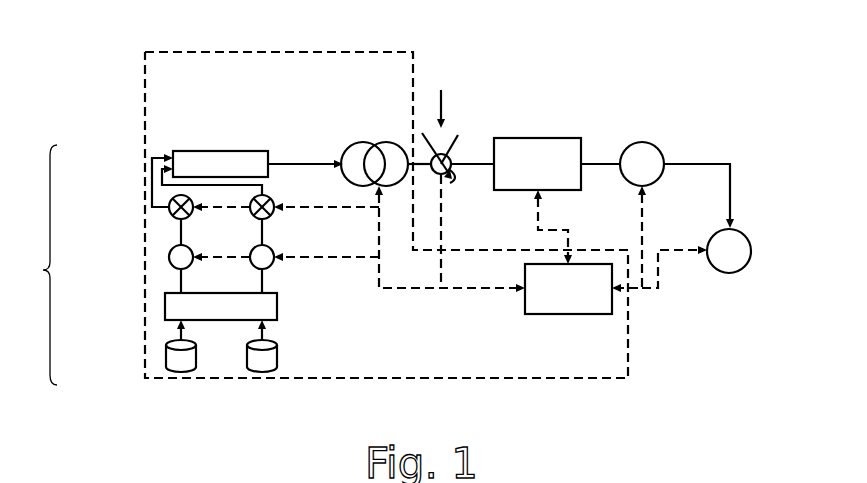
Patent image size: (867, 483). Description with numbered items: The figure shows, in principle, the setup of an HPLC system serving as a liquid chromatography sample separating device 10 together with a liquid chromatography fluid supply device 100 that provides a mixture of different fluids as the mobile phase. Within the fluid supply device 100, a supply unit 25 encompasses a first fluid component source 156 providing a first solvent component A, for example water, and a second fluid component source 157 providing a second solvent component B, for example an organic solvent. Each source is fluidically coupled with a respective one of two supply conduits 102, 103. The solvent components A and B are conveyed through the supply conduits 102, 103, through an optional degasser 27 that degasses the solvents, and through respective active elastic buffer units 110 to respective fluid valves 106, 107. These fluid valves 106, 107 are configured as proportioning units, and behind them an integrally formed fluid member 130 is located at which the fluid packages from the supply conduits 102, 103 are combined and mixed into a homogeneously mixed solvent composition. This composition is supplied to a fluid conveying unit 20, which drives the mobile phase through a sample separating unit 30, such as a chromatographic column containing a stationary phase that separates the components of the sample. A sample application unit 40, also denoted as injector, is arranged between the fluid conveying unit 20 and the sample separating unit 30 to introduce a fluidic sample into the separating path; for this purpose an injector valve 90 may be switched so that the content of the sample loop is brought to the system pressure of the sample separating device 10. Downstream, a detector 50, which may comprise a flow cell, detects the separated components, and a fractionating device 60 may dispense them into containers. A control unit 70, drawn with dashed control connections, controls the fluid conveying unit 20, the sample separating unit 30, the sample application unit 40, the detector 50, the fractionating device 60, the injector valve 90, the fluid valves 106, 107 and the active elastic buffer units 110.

The liquid chromatography sample separating device 10 is at (728, 114).
The fluid conveying unit 20 is at (372, 143).
The supply unit 25 is at (33, 265).
The degasser 27 is at (190, 307).
The sample separating unit 30 is at (556, 138).
The sample application unit 40 is at (452, 135).
The detector 50 is at (640, 142).
The fractionating device 60 is at (751, 244).
The control unit 70 is at (592, 314).
The injector valve 90 is at (462, 142).
The liquid chromatography fluid supply device 100 is at (145, 52).
The supply conduit 102 is at (178, 232).
The supply conduit 103 is at (264, 228).
The fluid valve 106 is at (170, 198).
The fluid valve 107 is at (268, 194).
The elastic buffer unit 110 is at (253, 247).
The integrally formed fluid member 130 is at (212, 167).
The first fluid component source 156 is at (178, 378).
The second fluid component source 157 is at (260, 378).
The first solvent component A is at (170, 372).
The second solvent component B is at (278, 362).